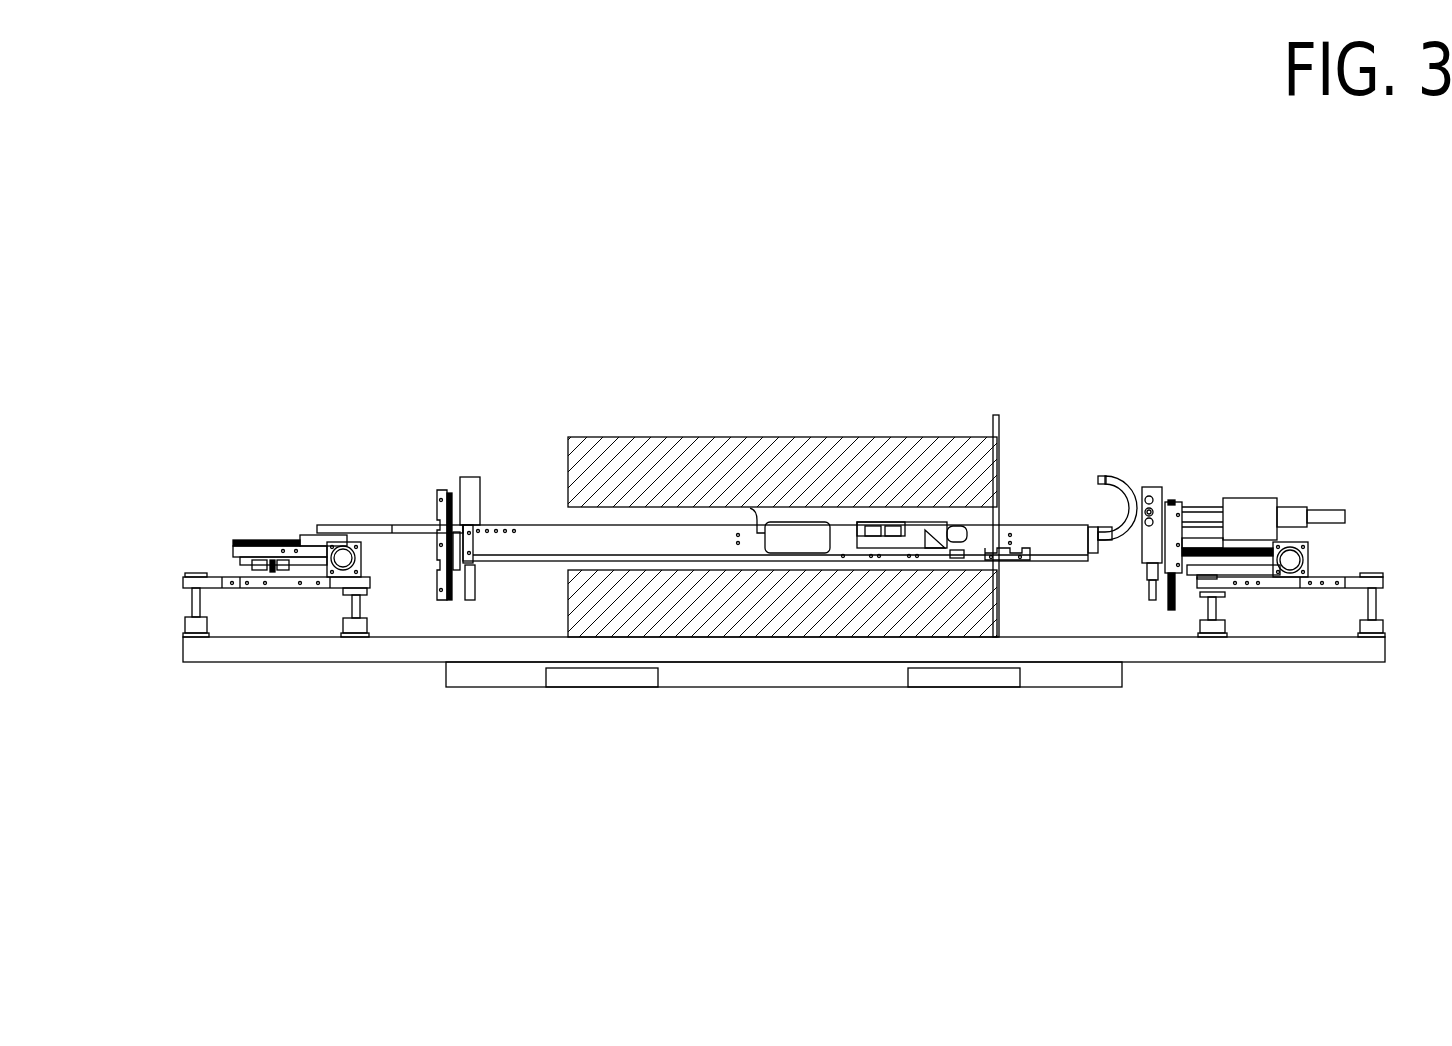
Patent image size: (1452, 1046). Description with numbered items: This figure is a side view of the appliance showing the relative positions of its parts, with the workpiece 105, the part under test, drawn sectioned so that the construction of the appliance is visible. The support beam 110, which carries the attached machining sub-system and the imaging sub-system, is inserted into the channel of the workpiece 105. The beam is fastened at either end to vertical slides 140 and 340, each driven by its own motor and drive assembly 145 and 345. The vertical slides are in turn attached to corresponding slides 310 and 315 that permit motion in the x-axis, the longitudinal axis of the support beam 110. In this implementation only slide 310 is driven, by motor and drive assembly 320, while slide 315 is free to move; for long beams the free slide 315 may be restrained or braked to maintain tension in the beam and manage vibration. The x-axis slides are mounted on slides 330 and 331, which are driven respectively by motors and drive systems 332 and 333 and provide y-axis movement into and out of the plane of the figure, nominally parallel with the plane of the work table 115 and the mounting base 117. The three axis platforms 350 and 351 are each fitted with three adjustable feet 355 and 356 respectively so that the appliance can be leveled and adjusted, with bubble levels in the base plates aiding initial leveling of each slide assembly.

The workpiece 105 is at (877, 450).
The support beam 110 is at (540, 535).
The work table 115 is at (832, 675).
The mounting base 117 is at (737, 651).
The vertical slide 140 is at (1172, 503).
The motor and drive assembly 145 is at (1153, 487).
The slide 310 is at (1207, 560).
The slide 315 is at (255, 530).
The motor and drive assembly 320 is at (1288, 508).
The slide 330 is at (1259, 580).
The slide 331 is at (300, 563).
The motor and drive system 332 is at (1290, 577).
The motor and drive system 333 is at (360, 562).
The vertical slide 340 is at (445, 553).
The motor and drive assembly 345 is at (467, 477).
The three axis platform 350 is at (1203, 587).
The three axis platform 351 is at (317, 590).
The adjustable feet 355 is at (1372, 625).
The adjustable feet 356 is at (184, 625).